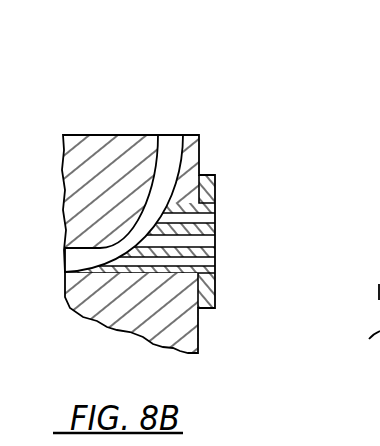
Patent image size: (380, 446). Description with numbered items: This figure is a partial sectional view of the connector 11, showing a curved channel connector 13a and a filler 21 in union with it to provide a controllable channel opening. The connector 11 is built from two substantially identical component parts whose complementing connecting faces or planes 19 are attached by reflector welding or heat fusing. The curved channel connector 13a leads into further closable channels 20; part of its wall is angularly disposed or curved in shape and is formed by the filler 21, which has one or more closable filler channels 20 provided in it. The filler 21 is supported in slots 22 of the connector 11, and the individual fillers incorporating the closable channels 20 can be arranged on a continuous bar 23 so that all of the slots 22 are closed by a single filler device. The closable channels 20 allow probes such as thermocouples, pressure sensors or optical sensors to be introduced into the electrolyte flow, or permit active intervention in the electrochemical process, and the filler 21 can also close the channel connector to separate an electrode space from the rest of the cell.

The connector 11 is at (91, 128).
The curved channel connector 13a is at (72, 261).
The complementing connecting faces or planes 19 is at (144, 130).
The closable filler channels 20 is at (215, 260).
The filler 21 is at (215, 297).
The slots 22 is at (213, 202).
The continuous bar 23 is at (216, 175).